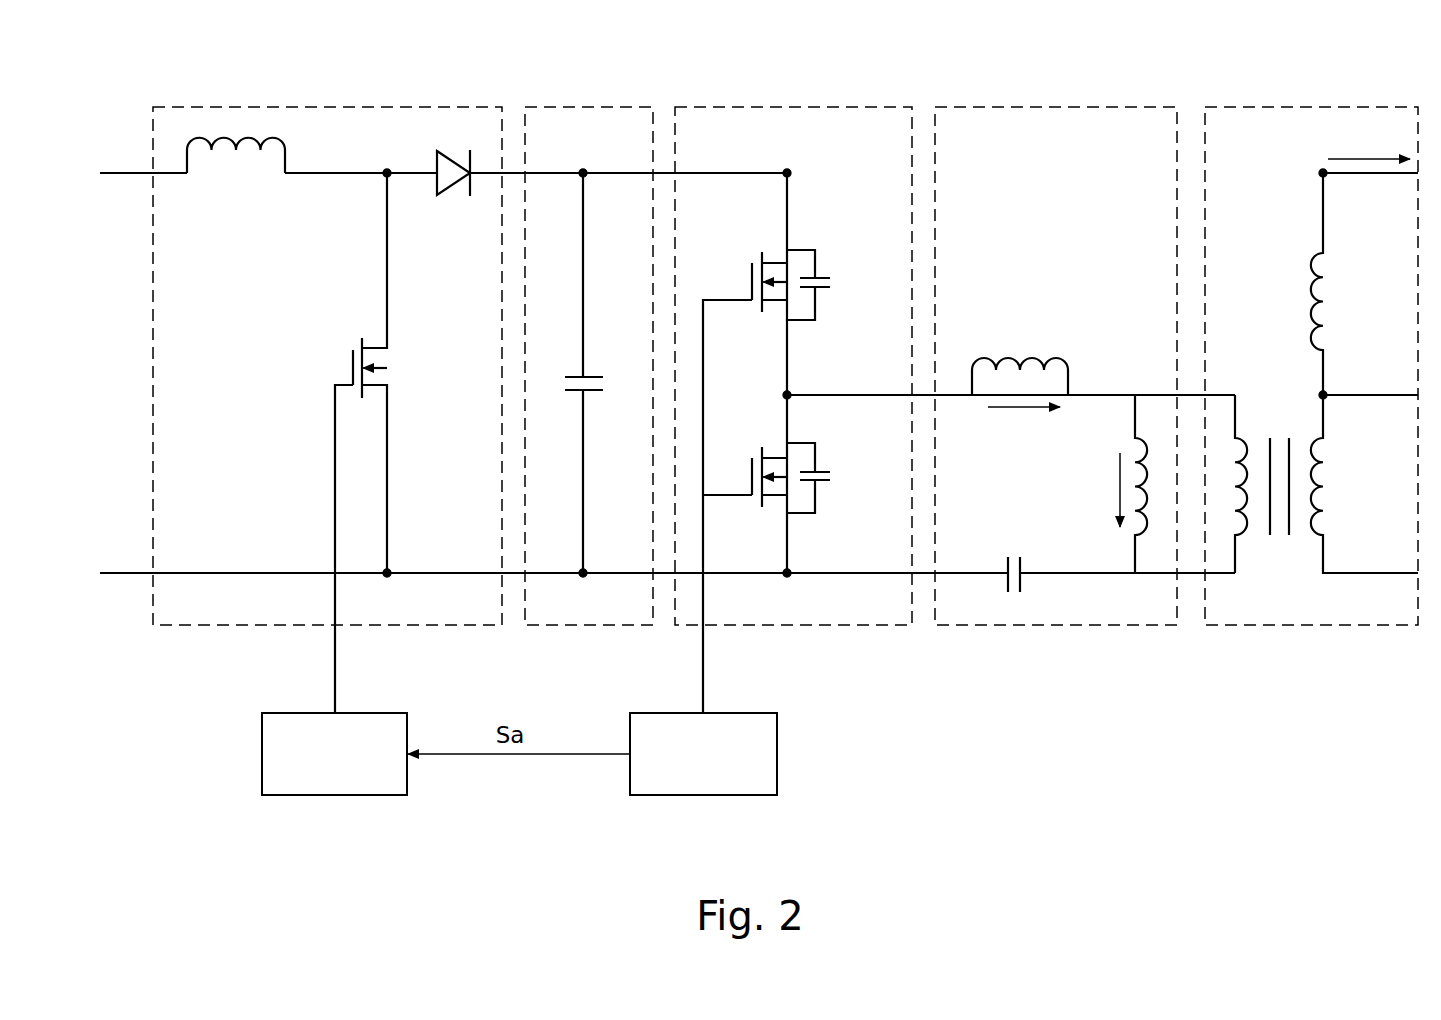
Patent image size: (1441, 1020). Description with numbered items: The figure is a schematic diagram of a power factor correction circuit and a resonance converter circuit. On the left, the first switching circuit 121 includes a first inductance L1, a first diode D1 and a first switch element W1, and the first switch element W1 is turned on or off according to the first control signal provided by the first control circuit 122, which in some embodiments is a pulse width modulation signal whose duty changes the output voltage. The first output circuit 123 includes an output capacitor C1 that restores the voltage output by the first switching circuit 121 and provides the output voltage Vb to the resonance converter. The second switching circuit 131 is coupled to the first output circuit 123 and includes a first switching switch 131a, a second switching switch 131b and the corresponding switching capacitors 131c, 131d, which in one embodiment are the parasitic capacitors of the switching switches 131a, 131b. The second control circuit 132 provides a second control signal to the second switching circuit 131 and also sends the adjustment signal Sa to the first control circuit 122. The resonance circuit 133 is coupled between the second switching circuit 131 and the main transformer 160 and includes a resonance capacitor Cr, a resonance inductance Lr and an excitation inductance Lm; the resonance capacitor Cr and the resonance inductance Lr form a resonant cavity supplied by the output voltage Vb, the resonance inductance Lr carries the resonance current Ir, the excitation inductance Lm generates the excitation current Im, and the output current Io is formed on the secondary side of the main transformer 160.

The first switching circuit 121 is at (327, 107).
The first control circuit 122 is at (310, 768).
The first output circuit 123 is at (604, 107).
The second switching circuit 131 is at (779, 107).
The first switching switch 131a is at (733, 643).
The second switching switch 131b is at (862, 653).
The switching capacitor 131c is at (840, 285).
The switching capacitor 131d is at (840, 478).
The second control circuit 132 is at (678, 768).
The resonance circuit 133 is at (1054, 107).
The main transformer 160 is at (1297, 107).
The first inductance L1 is at (236, 170).
The first diode D1 is at (455, 193).
The first switch element W1 is at (341, 443).
The output capacitor C1 is at (602, 373).
The resonance inductance Lr is at (1020, 361).
The excitation inductance Lm is at (1147, 395).
The resonance capacitor Cr is at (1013, 557).